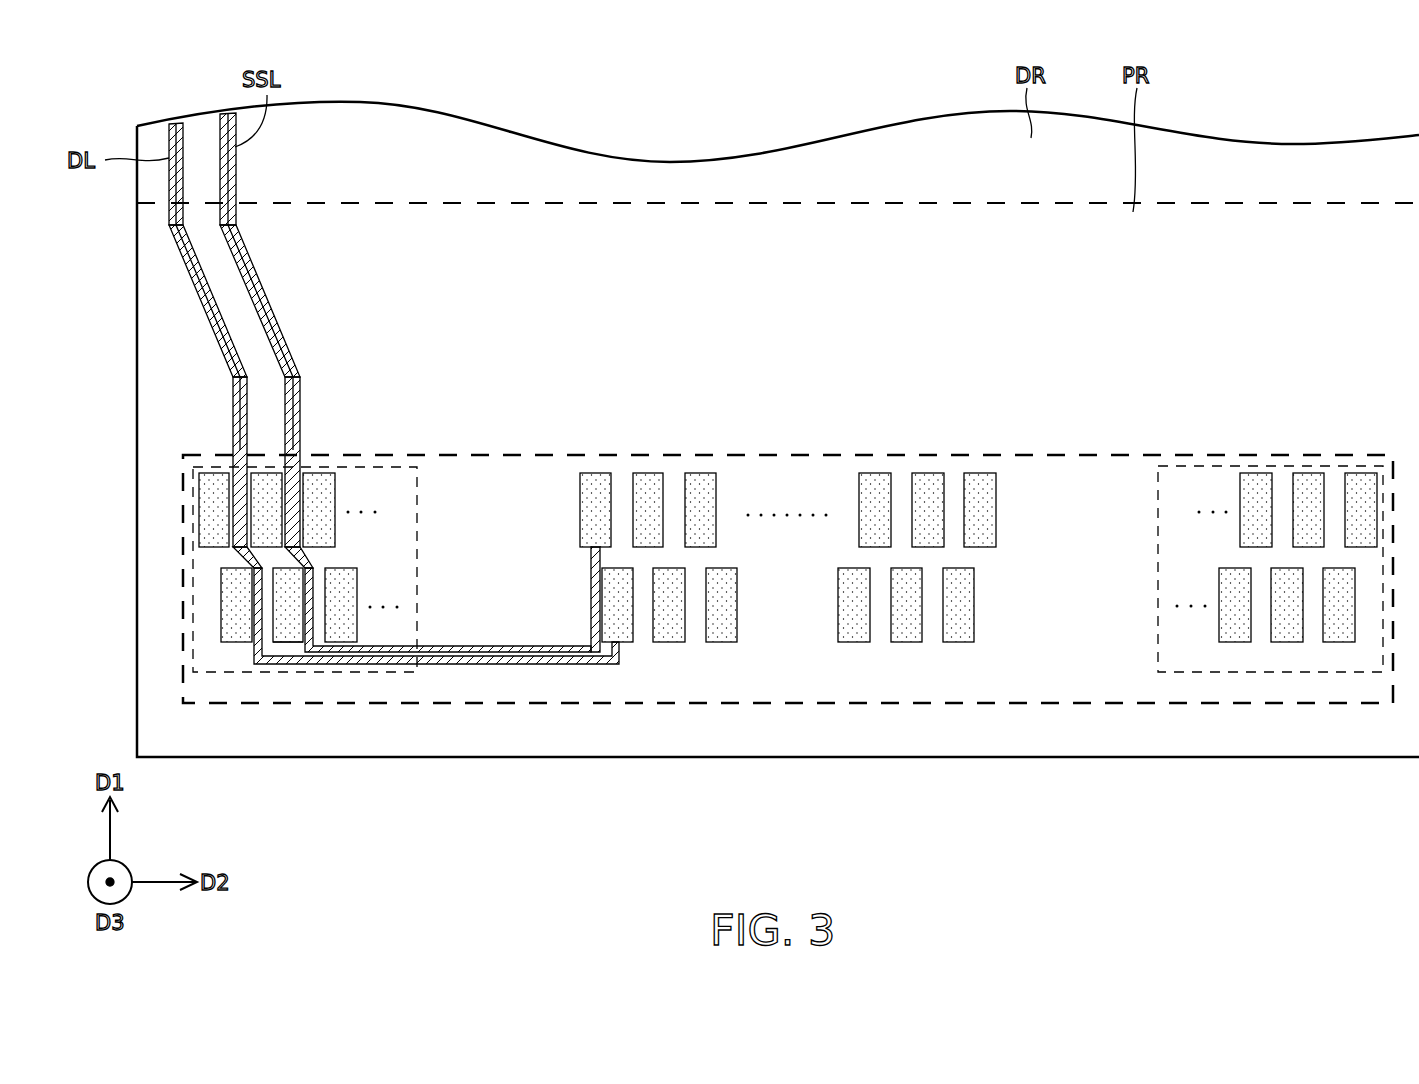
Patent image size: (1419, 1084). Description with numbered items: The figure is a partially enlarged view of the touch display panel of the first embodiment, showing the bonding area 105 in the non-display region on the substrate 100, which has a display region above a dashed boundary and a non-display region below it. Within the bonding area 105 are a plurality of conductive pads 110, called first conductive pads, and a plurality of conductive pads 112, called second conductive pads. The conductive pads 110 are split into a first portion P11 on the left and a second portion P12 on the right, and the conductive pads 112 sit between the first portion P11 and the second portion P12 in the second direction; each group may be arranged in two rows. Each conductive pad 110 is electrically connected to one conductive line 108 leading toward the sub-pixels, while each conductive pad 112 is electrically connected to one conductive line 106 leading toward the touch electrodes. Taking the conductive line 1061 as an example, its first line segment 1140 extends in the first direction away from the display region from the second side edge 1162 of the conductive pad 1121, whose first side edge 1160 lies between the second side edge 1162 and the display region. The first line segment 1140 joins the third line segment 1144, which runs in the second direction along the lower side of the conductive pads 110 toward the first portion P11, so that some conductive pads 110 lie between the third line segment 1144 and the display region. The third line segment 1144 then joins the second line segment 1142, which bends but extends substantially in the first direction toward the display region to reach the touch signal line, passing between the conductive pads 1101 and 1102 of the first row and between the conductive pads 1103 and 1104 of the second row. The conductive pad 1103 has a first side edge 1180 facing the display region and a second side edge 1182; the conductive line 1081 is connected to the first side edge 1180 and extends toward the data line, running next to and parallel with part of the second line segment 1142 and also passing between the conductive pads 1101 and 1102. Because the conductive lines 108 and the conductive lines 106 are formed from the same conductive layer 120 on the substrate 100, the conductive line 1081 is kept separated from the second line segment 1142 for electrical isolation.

The substrate 100 is at (1350, 757).
The bonding area 105 is at (1208, 703).
The conductive line 106 is at (410, 456).
The conductive line 1061 is at (422, 466).
The conductive line 108 is at (343, 393).
The conductive line 1081 is at (247, 307).
The conductive pad 110 is at (727, 461).
The conductive pad 1101 is at (262, 490).
The conductive pad 1102 is at (320, 480).
The conductive pad 1103 is at (283, 620).
The conductive pad 1104 is at (343, 632).
The conductive pad 112 is at (782, 502).
The conductive pad 1121 is at (596, 455).
The first line segment 1140 is at (538, 529).
The second line segment 1142 is at (280, 332).
The third line segment 1144 is at (443, 645).
The first side edge 1160 is at (622, 455).
The second side edge 1162 is at (592, 547).
The first side edge 1180 is at (715, 699).
The second side edge 1182 is at (288, 642).
The conductive layer 120 is at (343, 471).
The first portion P11 is at (410, 673).
The second portion P12 is at (1200, 466).